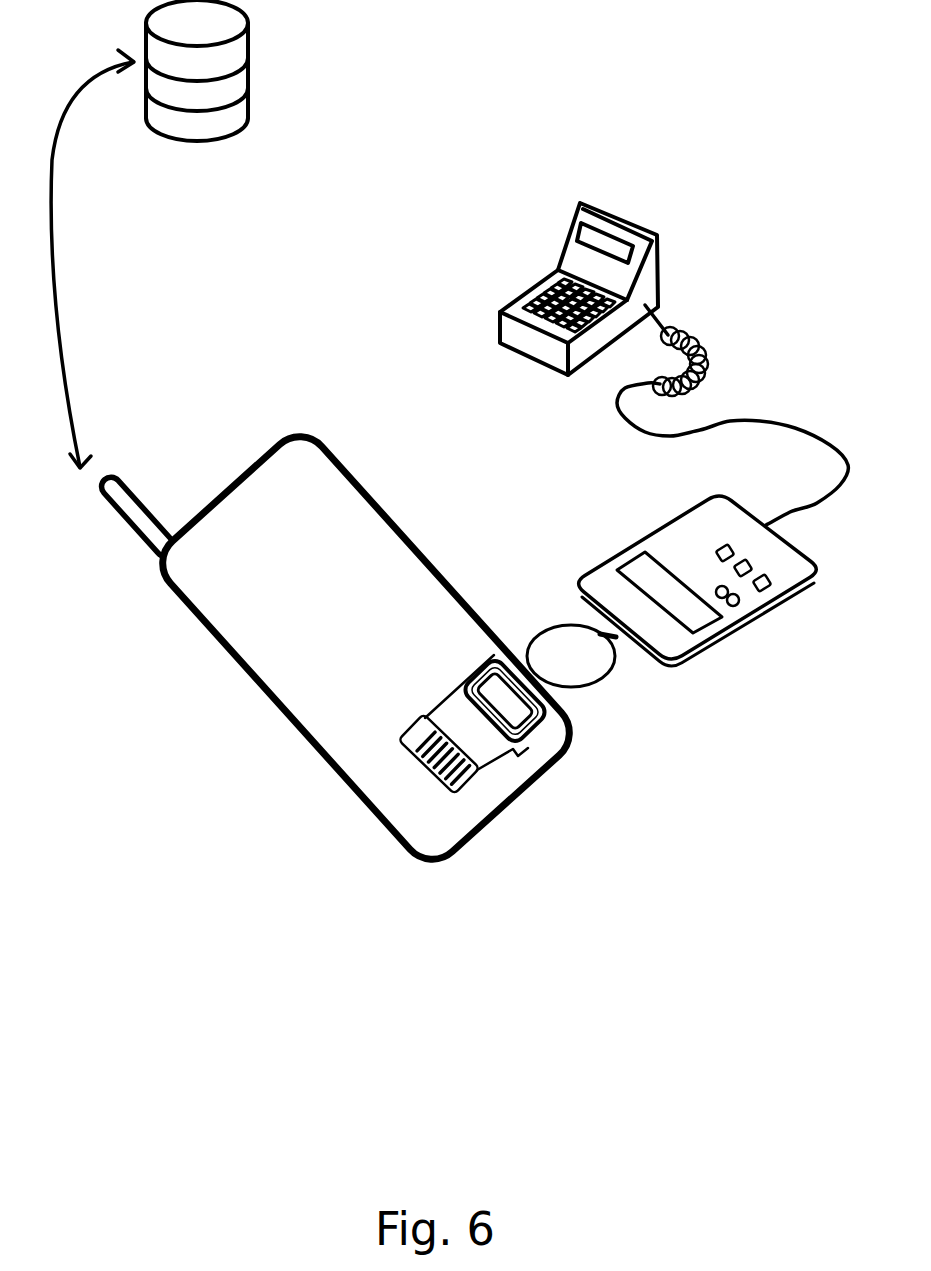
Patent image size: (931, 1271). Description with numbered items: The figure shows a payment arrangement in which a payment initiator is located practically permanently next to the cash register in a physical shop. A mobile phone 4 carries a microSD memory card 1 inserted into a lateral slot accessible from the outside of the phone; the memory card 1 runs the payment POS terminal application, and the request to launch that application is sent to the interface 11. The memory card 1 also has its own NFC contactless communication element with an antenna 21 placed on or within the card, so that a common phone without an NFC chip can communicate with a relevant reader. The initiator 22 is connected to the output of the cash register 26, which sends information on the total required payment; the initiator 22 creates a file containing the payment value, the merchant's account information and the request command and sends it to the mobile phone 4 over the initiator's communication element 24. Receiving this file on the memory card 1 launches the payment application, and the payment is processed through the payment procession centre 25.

The microSD memory card 1 is at (485, 750).
The mobile phone 4 is at (265, 641).
The interface 11 is at (422, 757).
The antenna 21 is at (494, 737).
The initiator 22 is at (663, 623).
The initiator's communication element 24 is at (590, 687).
The payment procession centre 25 is at (195, 95).
The cash register 26 is at (587, 262).